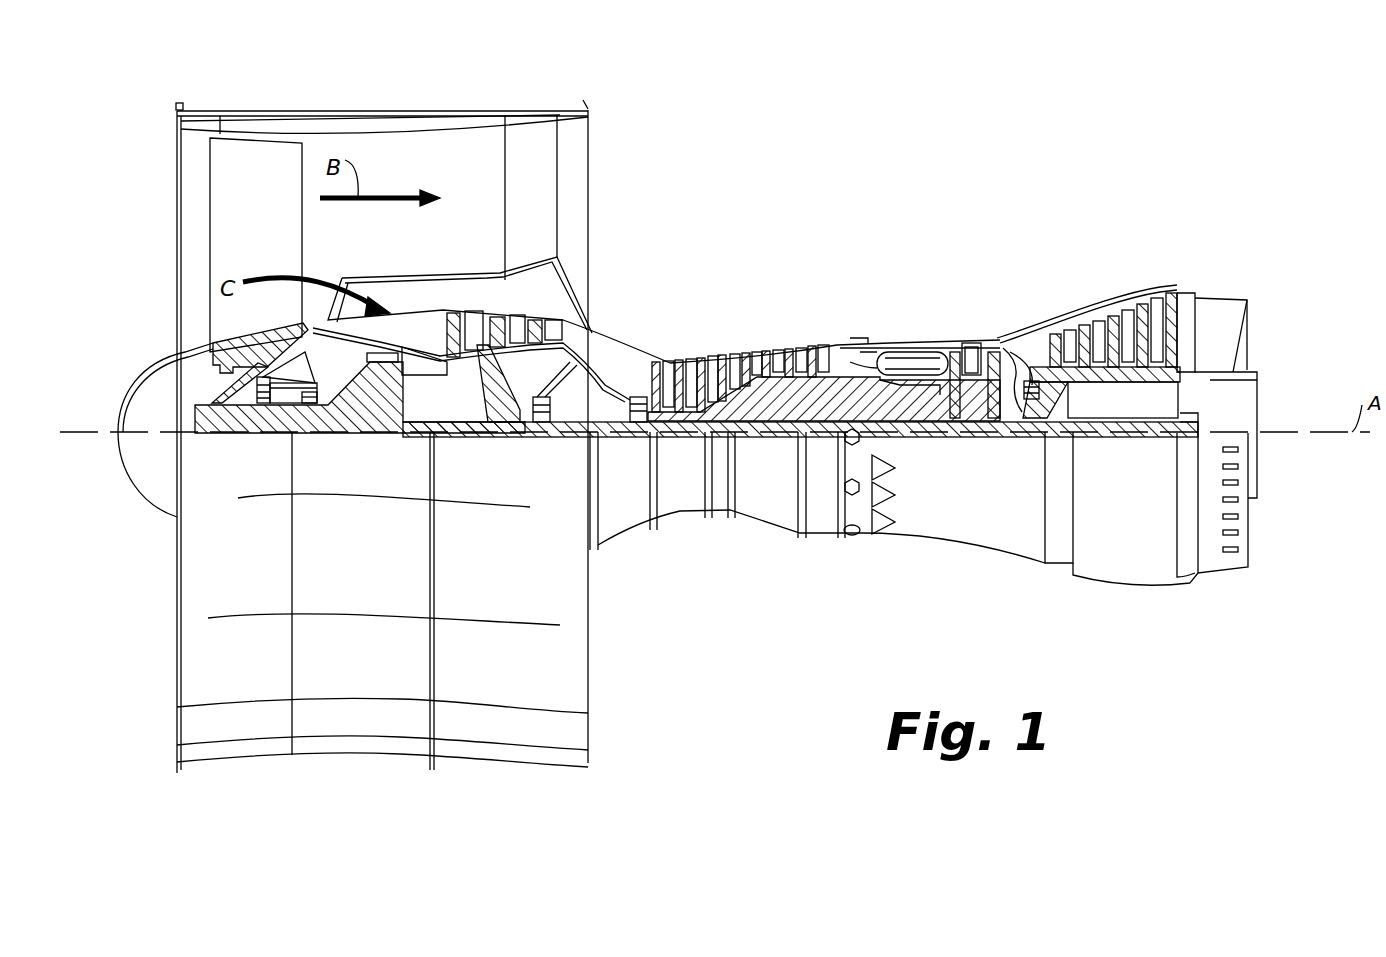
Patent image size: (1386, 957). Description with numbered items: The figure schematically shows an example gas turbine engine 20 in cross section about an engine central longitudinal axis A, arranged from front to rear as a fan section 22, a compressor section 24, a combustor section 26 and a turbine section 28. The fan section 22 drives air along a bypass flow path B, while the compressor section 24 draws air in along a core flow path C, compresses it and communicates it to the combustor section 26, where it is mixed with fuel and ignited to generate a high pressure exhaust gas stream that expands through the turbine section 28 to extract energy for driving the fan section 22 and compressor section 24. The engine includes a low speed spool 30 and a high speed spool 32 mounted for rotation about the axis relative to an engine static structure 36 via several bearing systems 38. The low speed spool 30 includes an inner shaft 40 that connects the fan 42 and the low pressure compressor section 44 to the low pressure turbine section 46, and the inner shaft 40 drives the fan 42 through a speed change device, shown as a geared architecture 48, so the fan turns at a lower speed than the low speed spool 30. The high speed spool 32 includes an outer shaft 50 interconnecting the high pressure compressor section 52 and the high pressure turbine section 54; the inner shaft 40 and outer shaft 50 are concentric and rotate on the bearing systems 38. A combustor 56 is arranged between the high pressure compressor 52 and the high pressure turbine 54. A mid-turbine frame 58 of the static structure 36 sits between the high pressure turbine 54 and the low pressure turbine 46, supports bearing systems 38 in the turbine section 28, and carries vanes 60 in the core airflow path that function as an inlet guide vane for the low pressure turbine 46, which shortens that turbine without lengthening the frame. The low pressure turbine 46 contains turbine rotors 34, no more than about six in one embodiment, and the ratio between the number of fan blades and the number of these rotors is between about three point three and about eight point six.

The gas turbine engine 20 is at (905, 165).
The fan section 22 is at (413, 80).
The compressor section 24 is at (425, 228).
The combustor section 26 is at (950, 228).
The turbine section 28 is at (958, 228).
The low speed spool 30 is at (763, 445).
The high speed spool 32 is at (813, 403).
The turbine rotors 34 is at (1125, 382).
The engine static structure 36 is at (812, 520).
The bearing systems 38 is at (258, 410).
The inner shaft 40 is at (612, 434).
The fan 42 is at (262, 250).
The low pressure compressor section 44 is at (520, 300).
The low pressure turbine section 46 is at (1115, 300).
The geared architecture 48 is at (386, 400).
The outer shaft 50 is at (905, 412).
The high pressure compressor section 52 is at (745, 380).
The high pressure turbine section 54 is at (973, 342).
The combustor 56 is at (900, 365).
The mid-turbine frame 58 is at (1028, 318).
The vanes 60 is at (1015, 355).